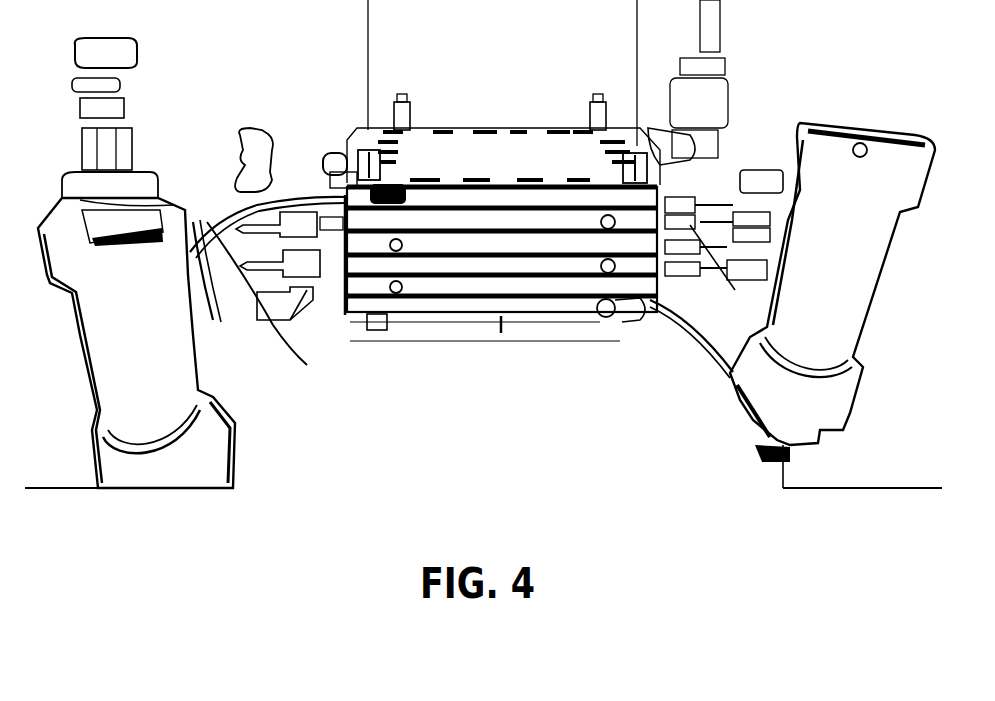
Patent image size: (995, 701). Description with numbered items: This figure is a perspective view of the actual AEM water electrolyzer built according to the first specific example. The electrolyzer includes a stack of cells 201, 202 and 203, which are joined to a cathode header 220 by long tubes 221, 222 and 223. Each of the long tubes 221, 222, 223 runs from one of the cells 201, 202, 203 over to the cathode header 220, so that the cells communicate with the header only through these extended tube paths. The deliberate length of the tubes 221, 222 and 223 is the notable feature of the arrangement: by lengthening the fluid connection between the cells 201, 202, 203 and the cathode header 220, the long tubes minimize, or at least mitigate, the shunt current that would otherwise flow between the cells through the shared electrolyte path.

The cell 201 is at (412, 213).
The cell 202 is at (456, 253).
The cell 203 is at (577, 300).
The cathode header 220 is at (147, 393).
The long tube 221 is at (203, 247).
The long tube 222 is at (202, 285).
The long tube 223 is at (203, 330).